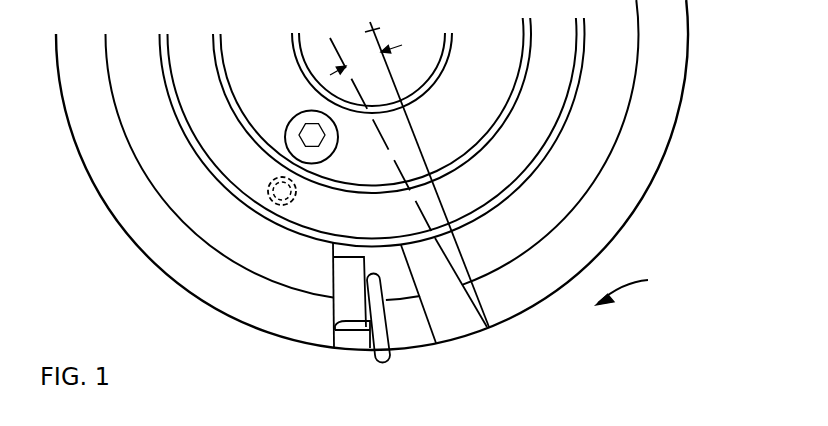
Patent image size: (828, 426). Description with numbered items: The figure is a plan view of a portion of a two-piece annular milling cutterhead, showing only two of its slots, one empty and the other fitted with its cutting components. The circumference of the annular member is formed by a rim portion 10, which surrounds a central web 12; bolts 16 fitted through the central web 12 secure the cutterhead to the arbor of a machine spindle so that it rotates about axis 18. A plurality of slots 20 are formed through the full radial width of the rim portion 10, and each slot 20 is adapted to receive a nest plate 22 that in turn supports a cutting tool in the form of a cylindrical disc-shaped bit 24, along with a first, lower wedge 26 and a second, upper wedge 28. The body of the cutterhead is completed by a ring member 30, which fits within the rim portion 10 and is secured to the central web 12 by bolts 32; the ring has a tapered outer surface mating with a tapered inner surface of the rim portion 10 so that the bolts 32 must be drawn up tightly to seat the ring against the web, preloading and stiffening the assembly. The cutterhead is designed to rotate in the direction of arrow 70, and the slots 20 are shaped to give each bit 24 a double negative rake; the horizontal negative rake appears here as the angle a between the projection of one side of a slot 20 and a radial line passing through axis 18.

The rim portion 10 is at (268, 313).
The central web 12 is at (458, 119).
The bolts 16 is at (302, 113).
The axis 18 is at (368, 29).
The slots 20 is at (355, 356).
The nest plates 22 is at (374, 251).
The cylindrical disc-shaped bits 24 is at (390, 312).
The first (lower) wedge 26 is at (346, 346).
The second (upper) wedge 28 is at (345, 283).
The ring member 30 is at (539, 144).
The bolts 32 is at (273, 180).
The arrow 70 is at (634, 292).